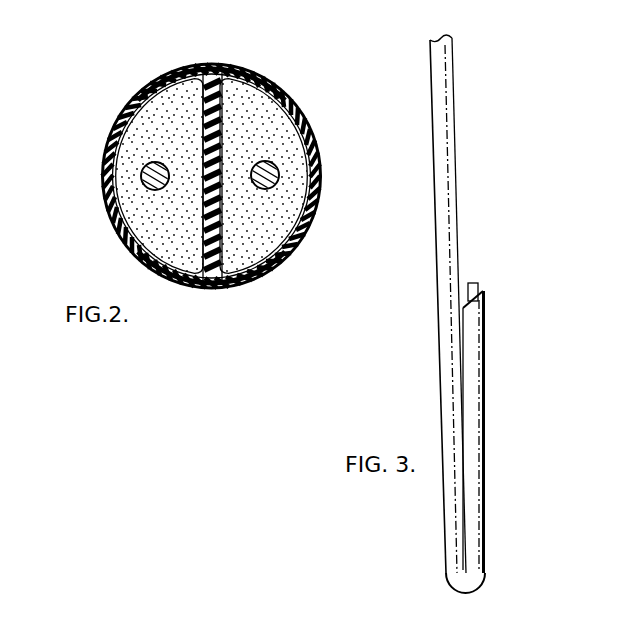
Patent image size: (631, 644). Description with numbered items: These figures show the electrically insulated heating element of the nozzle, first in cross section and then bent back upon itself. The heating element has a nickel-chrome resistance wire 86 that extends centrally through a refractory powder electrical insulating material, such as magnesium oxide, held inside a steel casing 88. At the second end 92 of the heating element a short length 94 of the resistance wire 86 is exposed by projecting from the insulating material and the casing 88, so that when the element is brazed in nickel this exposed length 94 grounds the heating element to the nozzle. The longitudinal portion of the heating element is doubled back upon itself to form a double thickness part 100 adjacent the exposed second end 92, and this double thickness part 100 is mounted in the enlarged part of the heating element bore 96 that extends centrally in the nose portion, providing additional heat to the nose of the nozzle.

In FIG. 2, the resistance wire 86 is at (278, 176).
In FIG. 2, the steel casing 88 is at (308, 125).
In FIG. 3, the steel casing 88 is at (473, 440).
In FIG. 3, the second end 92 is at (485, 296).
In FIG. 3, the short length 94 is at (478, 289).
In FIG. 3, the heating element bore 96 is at (447, 190).
In FIG. 3, the double thickness part 100 is at (472, 497).